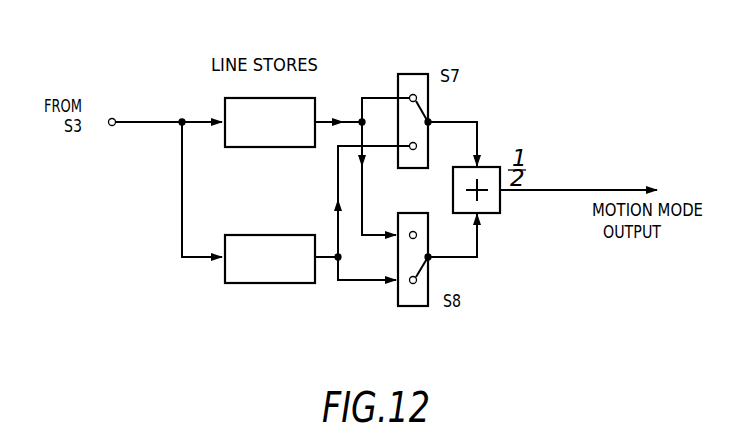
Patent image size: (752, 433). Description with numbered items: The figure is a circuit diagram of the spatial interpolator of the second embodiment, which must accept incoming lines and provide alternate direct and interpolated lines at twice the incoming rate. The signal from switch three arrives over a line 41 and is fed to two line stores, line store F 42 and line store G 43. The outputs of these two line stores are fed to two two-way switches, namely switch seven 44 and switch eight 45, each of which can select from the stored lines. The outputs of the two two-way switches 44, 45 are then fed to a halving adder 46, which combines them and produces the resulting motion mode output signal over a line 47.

The line 41 is at (147, 122).
The line store F 42 is at (258, 147).
The line store G 43 is at (255, 283).
The two-way switch S7 44 is at (398, 74).
The two-way switch S8 45 is at (398, 306).
The halving adder 46 is at (500, 213).
The line 47 is at (590, 190).